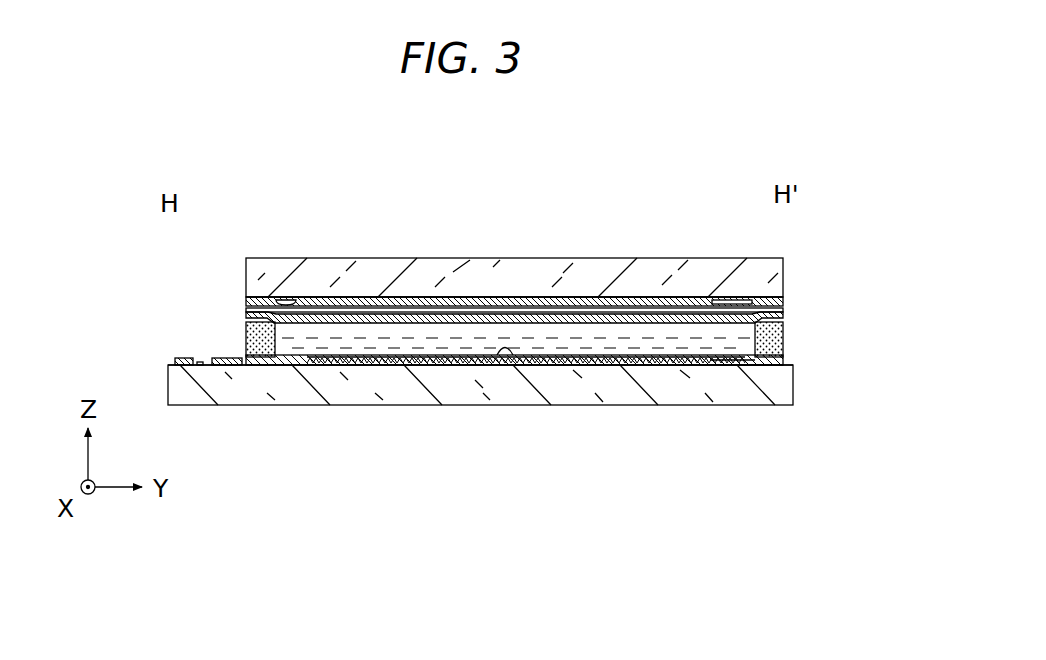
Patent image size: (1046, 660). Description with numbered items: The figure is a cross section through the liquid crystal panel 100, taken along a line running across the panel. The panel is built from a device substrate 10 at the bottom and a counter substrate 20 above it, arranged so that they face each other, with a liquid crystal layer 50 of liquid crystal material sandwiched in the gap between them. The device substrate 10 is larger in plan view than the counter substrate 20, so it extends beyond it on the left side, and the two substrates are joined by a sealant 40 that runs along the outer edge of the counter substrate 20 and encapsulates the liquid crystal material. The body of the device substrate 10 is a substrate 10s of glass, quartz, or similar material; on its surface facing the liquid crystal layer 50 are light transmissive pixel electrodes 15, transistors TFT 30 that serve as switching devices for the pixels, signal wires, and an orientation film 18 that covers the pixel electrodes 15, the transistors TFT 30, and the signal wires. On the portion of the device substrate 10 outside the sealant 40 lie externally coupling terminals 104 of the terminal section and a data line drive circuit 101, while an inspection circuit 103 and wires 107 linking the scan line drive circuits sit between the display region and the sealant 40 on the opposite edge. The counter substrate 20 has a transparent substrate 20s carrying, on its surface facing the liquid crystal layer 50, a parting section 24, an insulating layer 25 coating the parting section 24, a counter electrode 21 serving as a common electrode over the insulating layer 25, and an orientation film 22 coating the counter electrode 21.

The liquid crystal panel 100 is at (731, 131).
The device substrate 10 is at (805, 357).
The substrate 10s is at (583, 388).
The pixel electrode 15 is at (369, 366).
The orientation film 18 is at (500, 356).
The counter substrate 20 is at (805, 258).
The substrate 20s is at (515, 308).
The counter electrode 21 is at (655, 310).
The orientation film 22 is at (578, 320).
The parting section 24 is at (288, 298).
The insulating layer 25 is at (409, 298).
The transistor TFT 30 is at (514, 442).
The sealant 40 is at (784, 338).
The liquid crystal layer 50 is at (641, 357).
The data line drive circuit 101 is at (231, 357).
The inspection circuit 103 is at (722, 365).
The externally coupling terminal 104 is at (178, 357).
The wire 107 is at (737, 366).